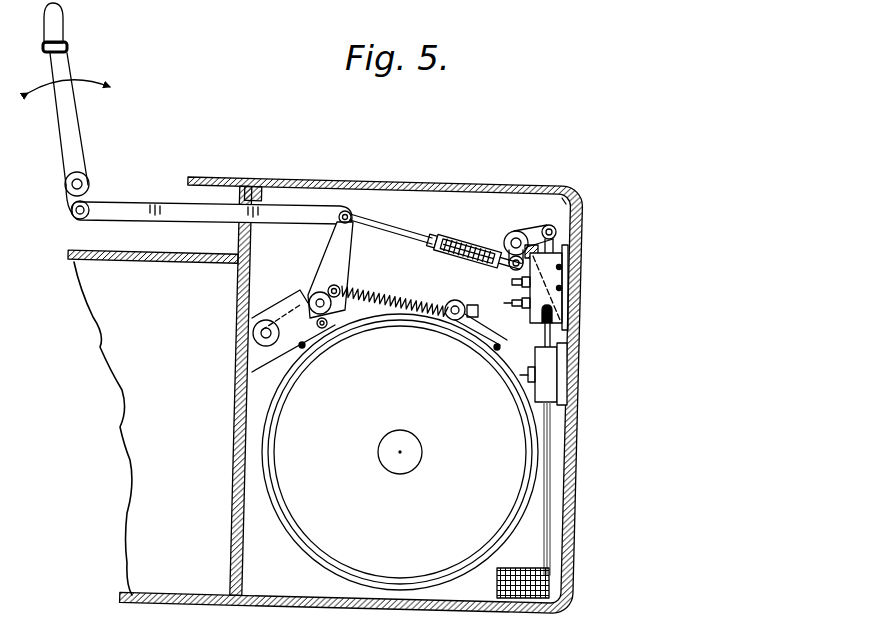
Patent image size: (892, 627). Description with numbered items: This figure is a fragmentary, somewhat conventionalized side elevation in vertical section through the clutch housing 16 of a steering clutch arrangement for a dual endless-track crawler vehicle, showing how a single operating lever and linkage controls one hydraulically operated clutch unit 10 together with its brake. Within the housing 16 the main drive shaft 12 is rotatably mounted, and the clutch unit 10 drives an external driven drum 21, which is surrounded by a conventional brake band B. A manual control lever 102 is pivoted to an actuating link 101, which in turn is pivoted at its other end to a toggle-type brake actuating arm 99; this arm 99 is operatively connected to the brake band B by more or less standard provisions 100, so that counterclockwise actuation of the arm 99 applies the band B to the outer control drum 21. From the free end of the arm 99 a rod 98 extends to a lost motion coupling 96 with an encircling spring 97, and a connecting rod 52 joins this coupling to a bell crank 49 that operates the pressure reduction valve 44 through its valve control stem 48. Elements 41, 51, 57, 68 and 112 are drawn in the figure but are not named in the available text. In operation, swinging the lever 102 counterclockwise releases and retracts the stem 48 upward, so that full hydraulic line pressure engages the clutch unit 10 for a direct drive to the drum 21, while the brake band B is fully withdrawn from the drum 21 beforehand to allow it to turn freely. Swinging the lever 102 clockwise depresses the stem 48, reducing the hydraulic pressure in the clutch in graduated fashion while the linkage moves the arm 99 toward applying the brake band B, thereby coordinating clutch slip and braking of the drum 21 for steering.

The steering clutch 10 is at (290, 546).
The main drive shaft 12 is at (402, 468).
The brake band B is at (262, 457).
The housing 16 is at (240, 304).
The driven drum 21 is at (399, 322).
The terminal 41 is at (507, 300).
The pressure reduction valve 44 is at (566, 262).
The valve control stem 48 is at (558, 240).
The bell crank 49 is at (535, 232).
The bracket 51 is at (563, 203).
The connecting rod 52 is at (493, 253).
The plunger cap 57 is at (570, 310).
The terminal 68 is at (508, 279).
The lost motion coupling 96 is at (440, 230).
The encircling spring 97 is at (466, 243).
The rod 98 is at (384, 212).
The brake actuating arm 99 is at (323, 253).
The brake band connecting provisions 100 is at (372, 287).
The actuating link 101 is at (146, 203).
The manual control lever 102 is at (76, 103).
The plunger rod 112 is at (550, 337).